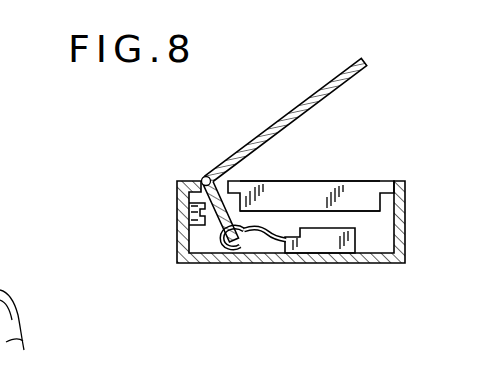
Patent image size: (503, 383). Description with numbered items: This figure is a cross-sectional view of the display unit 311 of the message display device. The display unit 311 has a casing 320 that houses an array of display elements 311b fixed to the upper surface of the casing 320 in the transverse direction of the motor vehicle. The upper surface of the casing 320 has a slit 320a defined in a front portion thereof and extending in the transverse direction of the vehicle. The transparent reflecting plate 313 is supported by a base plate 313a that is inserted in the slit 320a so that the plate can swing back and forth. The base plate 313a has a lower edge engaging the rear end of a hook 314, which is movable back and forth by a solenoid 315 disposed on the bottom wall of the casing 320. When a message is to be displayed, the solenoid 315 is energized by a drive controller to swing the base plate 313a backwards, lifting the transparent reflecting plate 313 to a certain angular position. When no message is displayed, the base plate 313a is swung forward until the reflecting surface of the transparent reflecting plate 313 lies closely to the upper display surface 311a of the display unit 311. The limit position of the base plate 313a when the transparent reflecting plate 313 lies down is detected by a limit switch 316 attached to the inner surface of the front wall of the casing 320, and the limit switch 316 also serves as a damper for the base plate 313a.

The display unit 311 is at (362, 187).
The upper display surface 311a is at (312, 180).
The display elements 311b is at (363, 203).
The transparent reflecting plate 313 is at (299, 103).
The base plate 313a is at (228, 210).
The hook 314 is at (249, 246).
The solenoid 315 is at (310, 246).
The limit switch 316 is at (190, 213).
The casing 320 is at (345, 263).
The slit 320a is at (204, 177).